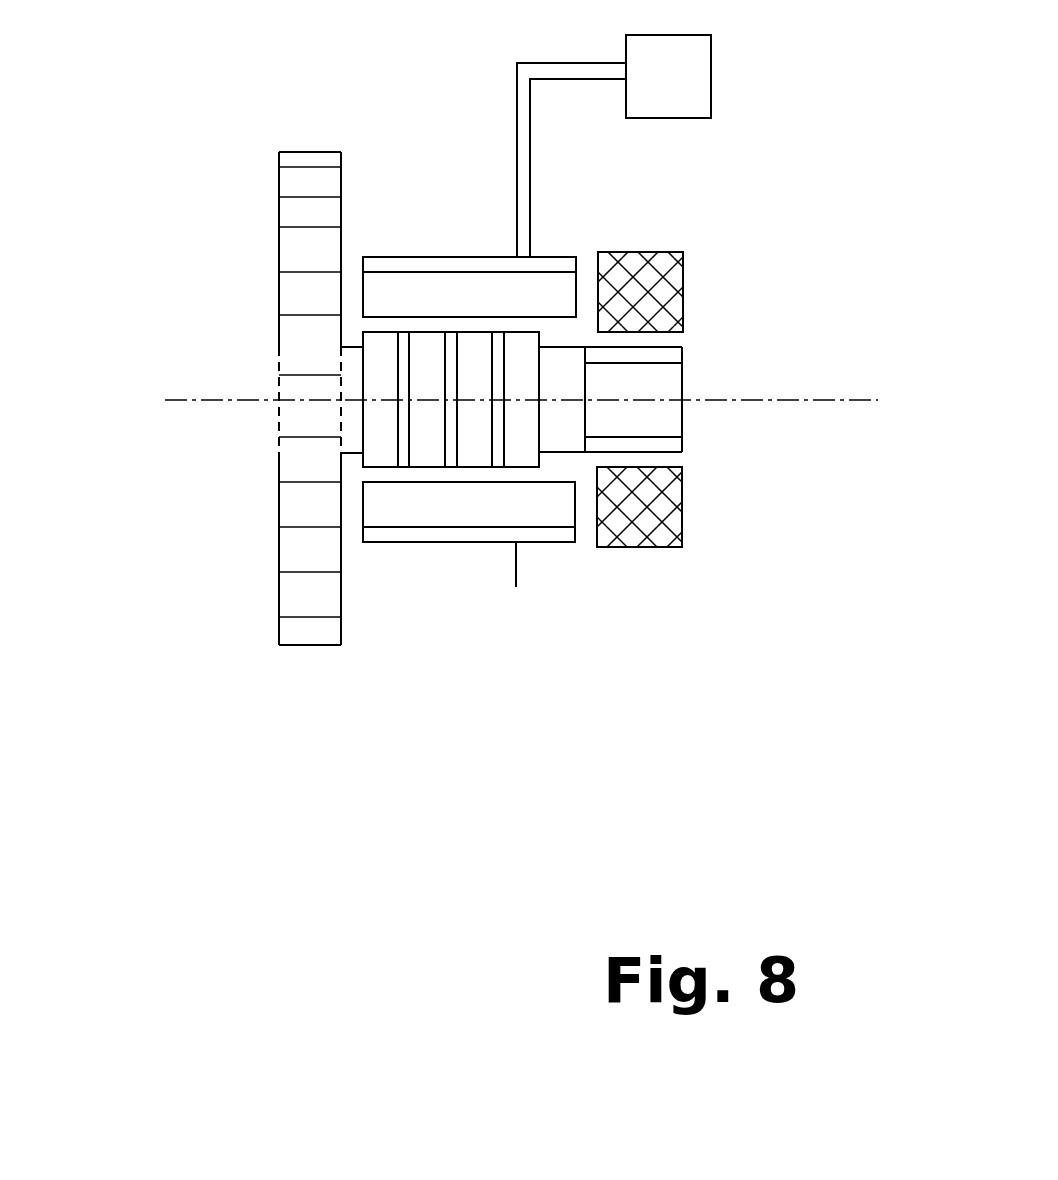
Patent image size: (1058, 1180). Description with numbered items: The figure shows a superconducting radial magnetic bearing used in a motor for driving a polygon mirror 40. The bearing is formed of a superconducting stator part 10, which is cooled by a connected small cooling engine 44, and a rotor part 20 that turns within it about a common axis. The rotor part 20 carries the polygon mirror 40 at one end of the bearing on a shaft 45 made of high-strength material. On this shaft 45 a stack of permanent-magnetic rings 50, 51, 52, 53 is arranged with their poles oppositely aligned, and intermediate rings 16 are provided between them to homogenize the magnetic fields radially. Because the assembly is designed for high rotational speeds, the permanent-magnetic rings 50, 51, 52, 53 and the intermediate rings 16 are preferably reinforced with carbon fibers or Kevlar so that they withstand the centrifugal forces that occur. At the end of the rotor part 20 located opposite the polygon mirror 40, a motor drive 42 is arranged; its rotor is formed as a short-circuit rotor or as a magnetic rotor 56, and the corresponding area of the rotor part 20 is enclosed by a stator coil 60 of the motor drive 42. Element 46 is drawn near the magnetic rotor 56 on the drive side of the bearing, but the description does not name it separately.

The superconducting stator part 10 is at (472, 243).
The intermediate rings 16 is at (495, 460).
The rotor part 20 is at (255, 420).
The polygon mirror 40 is at (312, 515).
The motor drive 42 is at (662, 560).
The cooling engine 44 is at (685, 80).
The shaft 45 is at (558, 427).
The armature 46 is at (520, 322).
The permanent-magnetic ring 50 is at (380, 443).
The permanent-magnetic ring 51 is at (430, 448).
The permanent-magnetic ring 52 is at (475, 443).
The permanent-magnetic ring 53 is at (520, 443).
The magnetic rotor 56 is at (666, 445).
The stator coil 60 is at (666, 517).